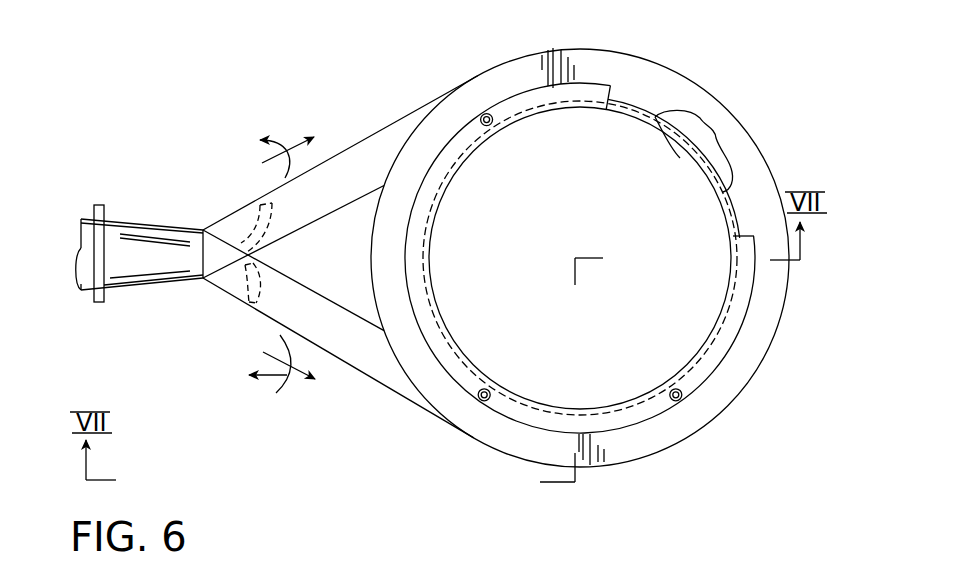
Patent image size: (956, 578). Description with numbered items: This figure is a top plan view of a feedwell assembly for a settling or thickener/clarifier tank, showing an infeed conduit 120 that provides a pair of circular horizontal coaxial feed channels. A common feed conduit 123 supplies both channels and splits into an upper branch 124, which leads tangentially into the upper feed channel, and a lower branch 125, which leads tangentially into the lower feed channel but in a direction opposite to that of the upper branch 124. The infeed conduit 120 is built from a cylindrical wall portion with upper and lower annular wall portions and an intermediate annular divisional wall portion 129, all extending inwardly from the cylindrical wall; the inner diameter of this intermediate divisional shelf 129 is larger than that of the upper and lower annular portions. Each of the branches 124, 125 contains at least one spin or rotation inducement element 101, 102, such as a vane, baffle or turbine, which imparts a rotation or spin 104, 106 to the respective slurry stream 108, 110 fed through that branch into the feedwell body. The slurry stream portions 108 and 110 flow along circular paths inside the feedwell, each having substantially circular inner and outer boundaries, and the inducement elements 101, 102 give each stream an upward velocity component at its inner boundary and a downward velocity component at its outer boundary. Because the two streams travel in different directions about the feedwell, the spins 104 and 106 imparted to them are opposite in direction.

The spin or rotation inducement element 101 is at (262, 250).
The spin or rotation inducement element 102 is at (238, 298).
The rotation or spin 104 is at (277, 140).
The rotation or spin 106 is at (276, 392).
The slurry stream 108 is at (300, 140).
The slurry stream 110 is at (275, 367).
The infeed conduit 120 is at (372, 411).
The common feed conduit 123 is at (152, 225).
The upper branch 124 is at (370, 184).
The lower branch 125 is at (349, 334).
The intermediate annular divisional wall portion 129 is at (705, 142).